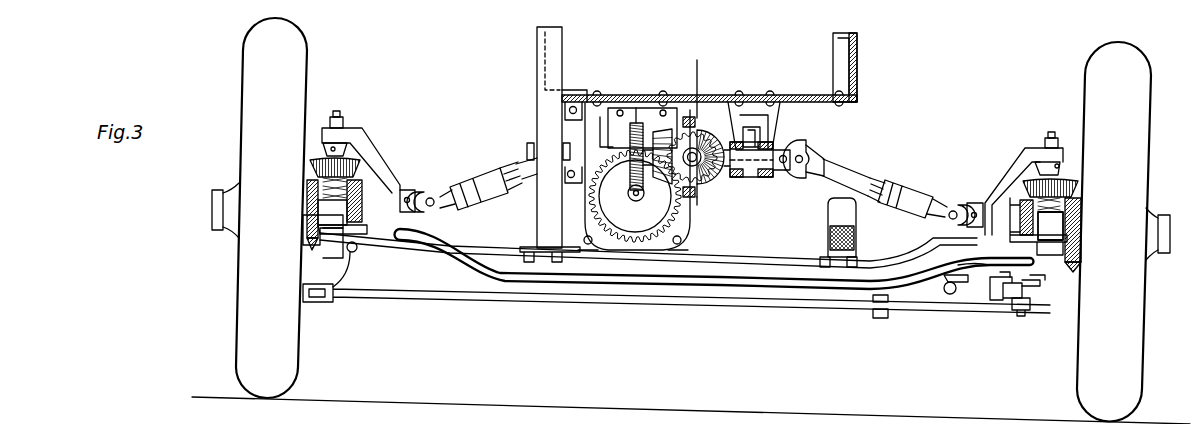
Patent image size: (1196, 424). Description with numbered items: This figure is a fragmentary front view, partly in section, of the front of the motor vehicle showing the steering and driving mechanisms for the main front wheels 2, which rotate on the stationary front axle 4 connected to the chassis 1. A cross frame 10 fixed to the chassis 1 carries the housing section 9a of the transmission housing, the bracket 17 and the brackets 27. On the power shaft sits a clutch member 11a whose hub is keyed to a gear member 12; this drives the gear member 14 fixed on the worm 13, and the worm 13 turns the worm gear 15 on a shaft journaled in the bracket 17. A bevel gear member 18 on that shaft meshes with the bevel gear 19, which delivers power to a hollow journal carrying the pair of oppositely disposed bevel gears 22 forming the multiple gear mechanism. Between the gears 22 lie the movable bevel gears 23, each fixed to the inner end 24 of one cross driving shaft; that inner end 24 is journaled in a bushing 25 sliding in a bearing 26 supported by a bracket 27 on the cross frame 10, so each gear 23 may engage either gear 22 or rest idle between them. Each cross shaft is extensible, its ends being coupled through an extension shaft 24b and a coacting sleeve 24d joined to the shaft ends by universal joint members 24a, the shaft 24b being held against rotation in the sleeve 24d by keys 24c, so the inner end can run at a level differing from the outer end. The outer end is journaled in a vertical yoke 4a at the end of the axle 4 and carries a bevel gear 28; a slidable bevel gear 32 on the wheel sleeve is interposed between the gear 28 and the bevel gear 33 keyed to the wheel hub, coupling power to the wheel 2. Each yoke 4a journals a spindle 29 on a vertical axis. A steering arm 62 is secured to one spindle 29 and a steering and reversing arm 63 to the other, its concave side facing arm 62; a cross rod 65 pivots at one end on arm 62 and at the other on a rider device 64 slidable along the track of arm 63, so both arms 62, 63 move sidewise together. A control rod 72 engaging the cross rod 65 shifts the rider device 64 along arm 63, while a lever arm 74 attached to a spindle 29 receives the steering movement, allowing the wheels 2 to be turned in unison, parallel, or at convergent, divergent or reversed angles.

The chassis 1 is at (537, 45).
The main front wheels 2 is at (308, 70).
The front axle 4 is at (757, 258).
The yokes 4a is at (383, 157).
The housing section 9a is at (690, 230).
The cross frame 10 is at (803, 95).
The clutch member 11a is at (700, 118).
The gear member 12 is at (700, 186).
The worm 13 is at (623, 156).
The gear member 14 is at (625, 242).
The worm gear 15 is at (638, 123).
The bracket 17 is at (600, 128).
The bevel gear member 18 is at (660, 148).
The bevel gear 19 is at (688, 145).
The bevel gears 22 is at (706, 152).
The movable bevel gears 23 is at (722, 175).
The inner end of driving shaft 24 is at (760, 178).
The universal joint member 24a is at (425, 186).
The extension shaft 24b is at (522, 165).
The keys 24c is at (512, 190).
The sleeve 24d is at (487, 178).
The bushing 25 is at (802, 150).
The bearing 26 is at (786, 168).
The bracket 27 is at (782, 120).
The bevel gear 28 is at (362, 183).
The spindles 29 is at (691, 410).
The bevel gear 32 is at (315, 160).
The bevel gear 33 is at (311, 250).
The steering arm 62 is at (357, 273).
The steering and reversing arm 63 is at (995, 300).
The rider device 64 is at (1040, 300).
The cross rod 65 is at (792, 305).
The intermediate rod 72 is at (880, 320).
The lever arm 74 is at (962, 296).